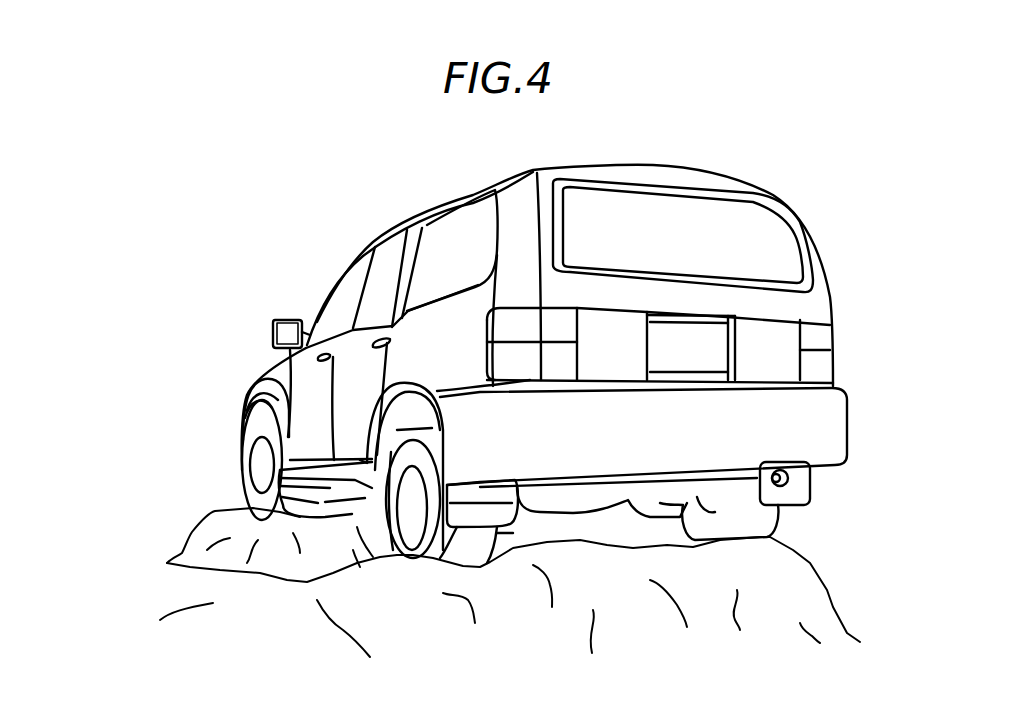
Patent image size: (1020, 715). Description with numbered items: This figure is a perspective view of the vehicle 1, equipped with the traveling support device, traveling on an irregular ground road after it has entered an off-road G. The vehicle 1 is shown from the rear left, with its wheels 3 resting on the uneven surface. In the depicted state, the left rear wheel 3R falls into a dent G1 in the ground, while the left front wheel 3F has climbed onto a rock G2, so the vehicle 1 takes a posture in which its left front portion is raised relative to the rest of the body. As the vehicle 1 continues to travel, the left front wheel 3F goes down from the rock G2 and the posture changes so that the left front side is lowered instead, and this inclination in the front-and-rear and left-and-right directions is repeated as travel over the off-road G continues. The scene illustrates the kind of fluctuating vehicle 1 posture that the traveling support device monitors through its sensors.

The vehicle 1 is at (644, 164).
The wheel 3 is at (506, 551).
The left front wheel 3F is at (262, 465).
The left rear wheel 3R is at (417, 533).
The off-road G is at (479, 610).
The dent G1 is at (477, 563).
The rock G2 is at (213, 528).